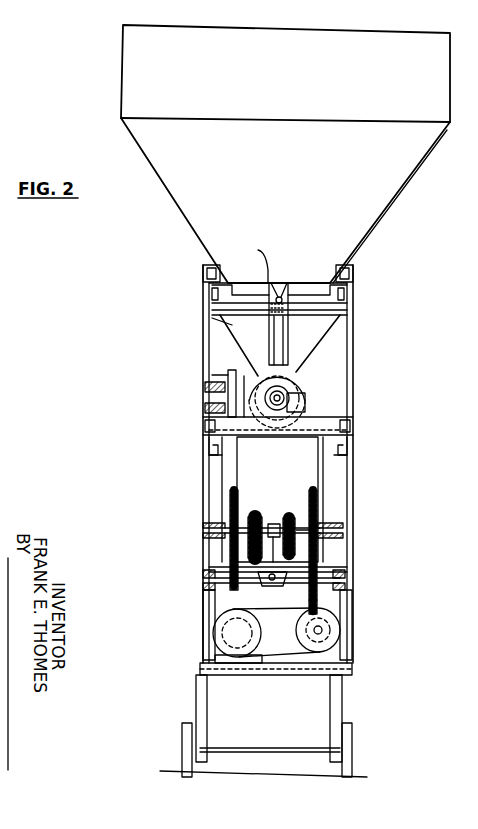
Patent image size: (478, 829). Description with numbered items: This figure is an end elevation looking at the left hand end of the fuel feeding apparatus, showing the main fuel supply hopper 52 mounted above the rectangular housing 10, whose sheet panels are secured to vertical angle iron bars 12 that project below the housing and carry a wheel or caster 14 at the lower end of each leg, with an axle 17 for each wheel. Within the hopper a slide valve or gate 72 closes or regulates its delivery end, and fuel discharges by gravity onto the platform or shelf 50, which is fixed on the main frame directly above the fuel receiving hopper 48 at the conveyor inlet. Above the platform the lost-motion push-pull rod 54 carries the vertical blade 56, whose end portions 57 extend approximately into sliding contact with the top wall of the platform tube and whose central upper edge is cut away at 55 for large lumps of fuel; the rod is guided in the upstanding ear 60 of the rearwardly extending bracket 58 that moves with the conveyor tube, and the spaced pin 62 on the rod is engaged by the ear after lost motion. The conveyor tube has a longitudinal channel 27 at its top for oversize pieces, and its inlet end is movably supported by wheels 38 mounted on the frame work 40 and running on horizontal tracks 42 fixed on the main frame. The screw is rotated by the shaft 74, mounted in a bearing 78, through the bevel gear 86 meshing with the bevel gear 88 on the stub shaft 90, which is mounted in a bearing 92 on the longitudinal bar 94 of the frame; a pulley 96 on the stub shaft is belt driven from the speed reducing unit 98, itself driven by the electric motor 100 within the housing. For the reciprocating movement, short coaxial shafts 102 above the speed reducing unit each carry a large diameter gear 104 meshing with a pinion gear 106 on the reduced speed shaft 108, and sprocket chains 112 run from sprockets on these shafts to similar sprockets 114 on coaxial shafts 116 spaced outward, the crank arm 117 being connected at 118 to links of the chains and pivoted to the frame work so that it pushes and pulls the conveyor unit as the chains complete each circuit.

The housing 10 is at (352, 268).
The vertical angle iron bars 12 is at (210, 337).
The wheel or caster 14 is at (186, 723).
The axle 17 is at (262, 750).
The longitudinal channel 27 is at (290, 372).
The wheels 38 is at (208, 441).
The frame work 40 is at (222, 468).
The horizontal tracks 42 is at (210, 454).
The fuel receiving hopper 48 is at (228, 325).
The platform or shelf 50 is at (350, 312).
The main fuel supply hopper 52 is at (410, 178).
The lost-motion push-pull rod 54 is at (282, 297).
The cut-away portion 55 is at (245, 290).
The vertical blade 56 is at (330, 300).
The end portions 57 is at (213, 292).
The rearwardly extending bracket 58 is at (289, 330).
The upstanding ear 60 is at (284, 283).
The pin 62 is at (255, 263).
The slide valve or gate 72 is at (313, 283).
The shaft 74 is at (300, 398).
The bearing 78 is at (285, 410).
The bevel gear 86 is at (303, 385).
The bevel gear 88 is at (252, 384).
The stub shaft 90 is at (210, 393).
The bearing 92 is at (220, 380).
The longitudinal bar 94 is at (205, 408).
The pulley 96 is at (238, 368).
The speed reducing unit 98 is at (320, 612).
The electric motor 100 is at (213, 633).
The short coaxial shafts 102 is at (200, 530).
The large diameter gear 104 is at (230, 497).
The pinion gear 106 is at (305, 588).
The reduced speed shaft 108 is at (350, 575).
The sprocket chains 112 is at (256, 517).
The sprockets 114 is at (290, 518).
The coaxial shafts 116 is at (249, 515).
The crank arm 117 is at (273, 522).
The connection 118 is at (283, 515).